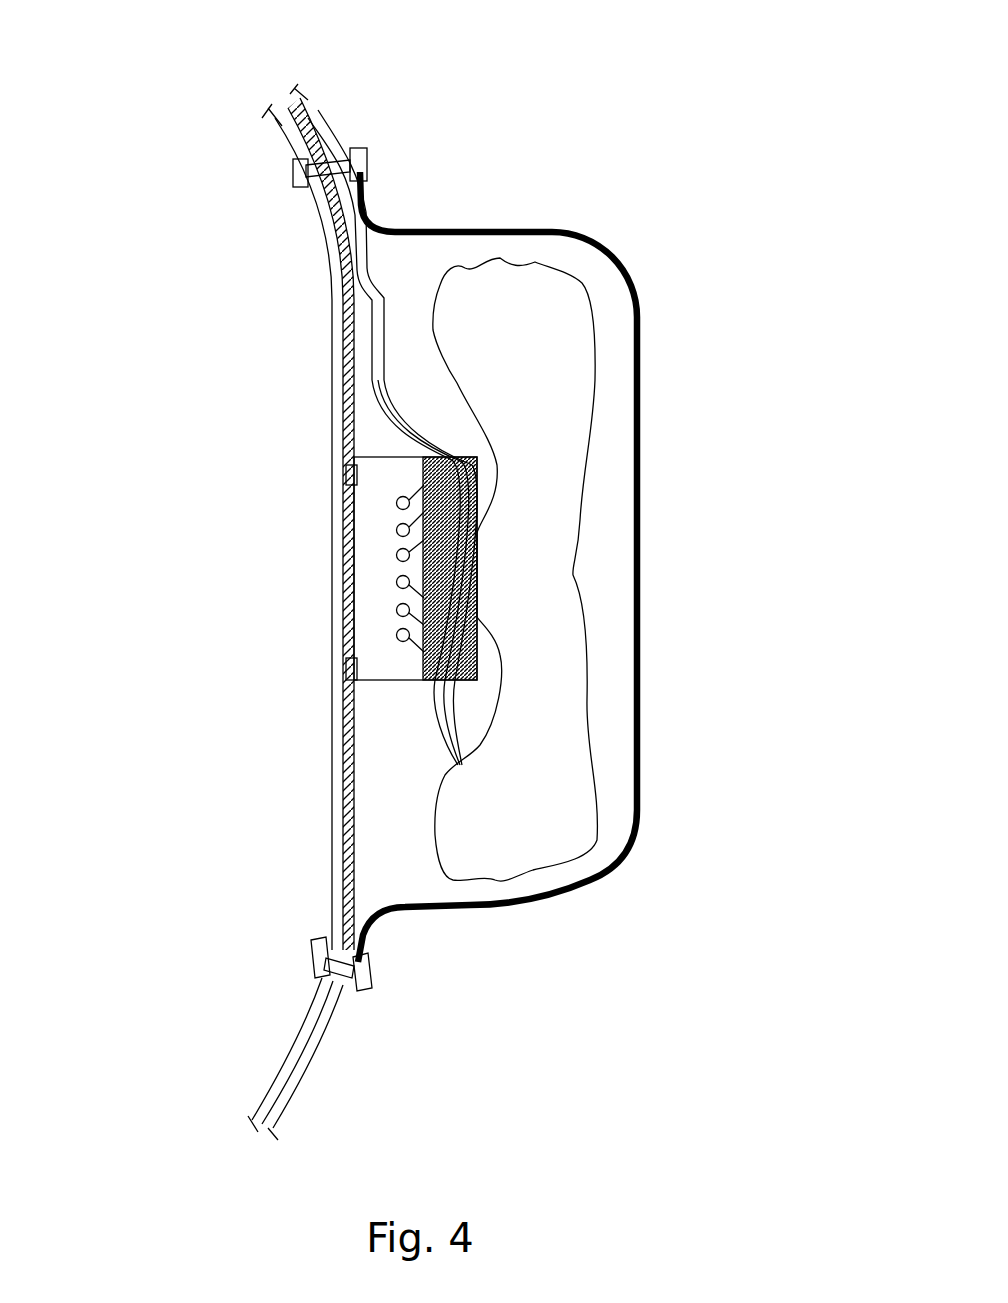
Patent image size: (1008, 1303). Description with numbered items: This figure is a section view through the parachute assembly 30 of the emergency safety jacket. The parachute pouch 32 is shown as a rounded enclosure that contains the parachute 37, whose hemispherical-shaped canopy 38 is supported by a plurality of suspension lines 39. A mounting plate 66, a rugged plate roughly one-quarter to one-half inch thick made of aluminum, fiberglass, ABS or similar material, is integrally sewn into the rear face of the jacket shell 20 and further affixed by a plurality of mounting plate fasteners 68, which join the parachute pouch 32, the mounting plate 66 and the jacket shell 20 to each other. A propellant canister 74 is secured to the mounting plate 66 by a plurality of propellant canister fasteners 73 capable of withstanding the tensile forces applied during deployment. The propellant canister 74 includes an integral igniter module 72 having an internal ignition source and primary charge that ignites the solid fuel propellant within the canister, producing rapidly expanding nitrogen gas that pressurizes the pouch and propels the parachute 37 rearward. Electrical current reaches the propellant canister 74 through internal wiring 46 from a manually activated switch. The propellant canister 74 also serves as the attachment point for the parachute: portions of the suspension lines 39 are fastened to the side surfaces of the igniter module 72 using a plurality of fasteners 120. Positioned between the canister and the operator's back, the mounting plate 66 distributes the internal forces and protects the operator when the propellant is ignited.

The jacket shell 20 is at (290, 100).
The parachute assembly 30 is at (650, 158).
The parachute pouch 32 is at (640, 660).
The parachute 37 is at (612, 868).
The canopy 38 is at (562, 510).
The suspension lines 39 is at (477, 455).
The internal wiring 46 is at (293, 134).
The mounting plate 66 is at (352, 355).
The mounting plate fasteners 68 is at (290, 181).
The igniter module 72 is at (373, 583).
The propellant canister fasteners 73 is at (350, 648).
The propellant canister 74 is at (480, 483).
The fasteners 120 is at (397, 556).